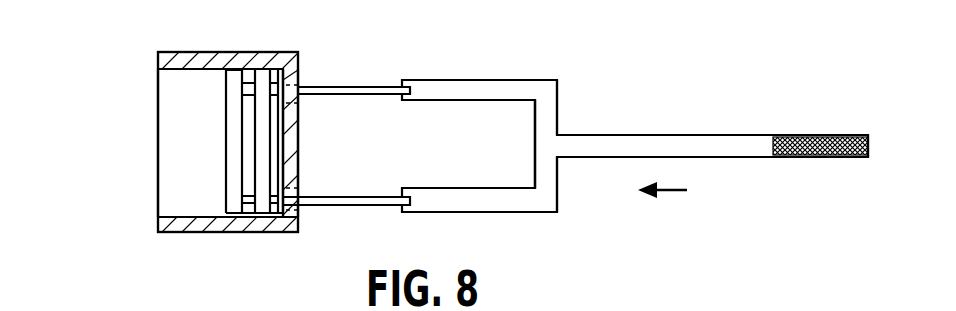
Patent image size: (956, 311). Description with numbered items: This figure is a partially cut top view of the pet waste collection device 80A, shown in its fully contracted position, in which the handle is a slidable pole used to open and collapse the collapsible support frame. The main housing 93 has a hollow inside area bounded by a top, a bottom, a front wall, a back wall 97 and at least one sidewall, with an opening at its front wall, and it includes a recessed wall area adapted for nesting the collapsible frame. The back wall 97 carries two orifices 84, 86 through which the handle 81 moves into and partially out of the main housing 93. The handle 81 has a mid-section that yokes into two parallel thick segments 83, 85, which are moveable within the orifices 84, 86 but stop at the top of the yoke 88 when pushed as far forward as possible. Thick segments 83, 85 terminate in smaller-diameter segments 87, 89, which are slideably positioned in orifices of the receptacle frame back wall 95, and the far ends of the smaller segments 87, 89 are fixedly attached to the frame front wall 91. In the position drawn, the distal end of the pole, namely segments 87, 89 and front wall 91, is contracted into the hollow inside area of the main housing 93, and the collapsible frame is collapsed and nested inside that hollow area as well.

The device 80A is at (122, 88).
The handle 81 is at (677, 135).
The thick segment 83 is at (458, 88).
The orifice 84 is at (297, 82).
The thick segment 85 is at (508, 197).
The orifice 86 is at (297, 209).
The smaller segment 87 is at (350, 87).
The yoke 88 is at (549, 105).
The smaller segment 89 is at (368, 197).
The frame front wall 91 is at (230, 163).
The main housing 93 is at (203, 52).
The receptacle frame back wall 95 is at (262, 118).
The back wall 97 is at (295, 158).